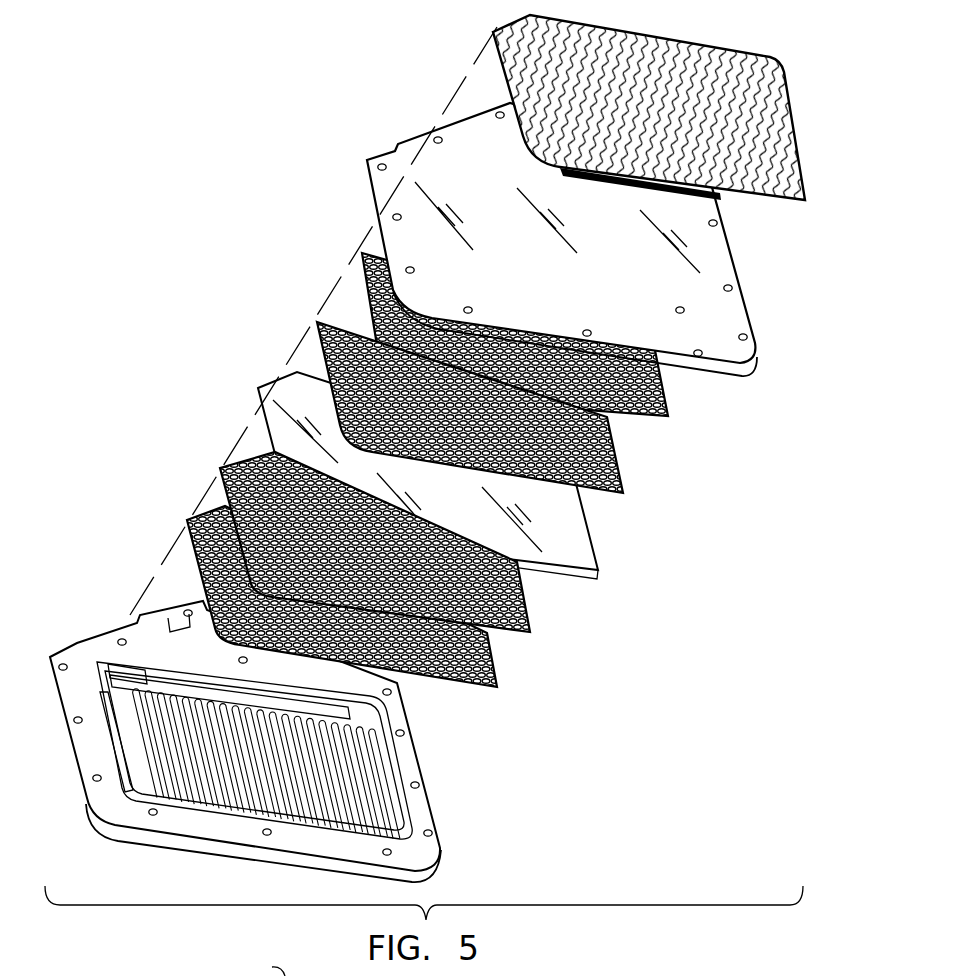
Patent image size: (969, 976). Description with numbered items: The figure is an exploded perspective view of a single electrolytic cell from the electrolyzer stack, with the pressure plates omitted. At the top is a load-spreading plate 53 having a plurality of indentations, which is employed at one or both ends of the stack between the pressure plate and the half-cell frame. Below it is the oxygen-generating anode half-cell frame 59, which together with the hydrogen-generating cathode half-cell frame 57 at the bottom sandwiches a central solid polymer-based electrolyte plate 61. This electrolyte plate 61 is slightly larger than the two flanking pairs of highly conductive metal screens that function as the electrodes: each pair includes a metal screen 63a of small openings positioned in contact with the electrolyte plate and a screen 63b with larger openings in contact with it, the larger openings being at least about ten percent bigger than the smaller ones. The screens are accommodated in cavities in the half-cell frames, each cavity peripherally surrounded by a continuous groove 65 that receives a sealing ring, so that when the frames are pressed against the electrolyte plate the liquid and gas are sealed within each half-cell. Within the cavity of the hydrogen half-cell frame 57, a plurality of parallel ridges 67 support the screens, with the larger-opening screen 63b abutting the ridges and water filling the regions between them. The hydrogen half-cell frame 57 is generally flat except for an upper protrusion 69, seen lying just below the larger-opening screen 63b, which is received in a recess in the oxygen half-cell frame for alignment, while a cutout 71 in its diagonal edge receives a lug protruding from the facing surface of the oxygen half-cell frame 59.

The load-spreading plate 53 is at (786, 118).
The oxygen-generating anode half-cell frame 59 is at (748, 262).
The solid polymer-based electrolyte plate 61 is at (600, 574).
The metal screen of small openings 63a is at (630, 488).
The screen with larger openings 63b is at (670, 418).
The hydrogen-generating cathode half-cell frame 57 is at (278, 718).
The continuous groove 65 is at (73, 656).
The parallel ridges 67 is at (345, 788).
The upper protrusion 69 is at (404, 693).
The cutout 71 is at (148, 620).